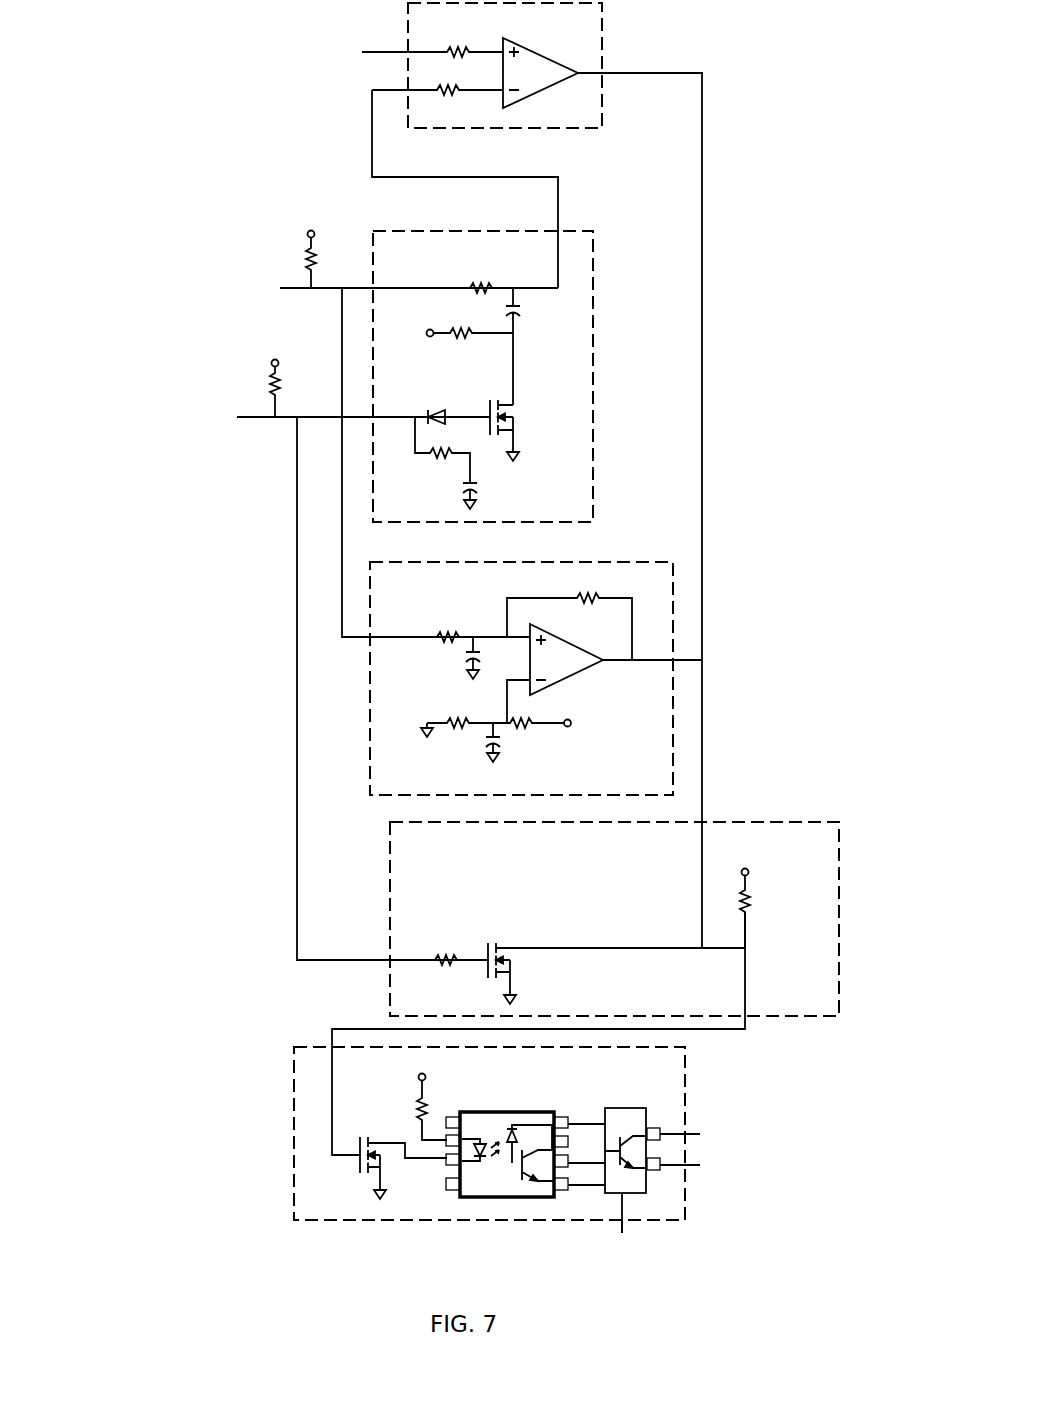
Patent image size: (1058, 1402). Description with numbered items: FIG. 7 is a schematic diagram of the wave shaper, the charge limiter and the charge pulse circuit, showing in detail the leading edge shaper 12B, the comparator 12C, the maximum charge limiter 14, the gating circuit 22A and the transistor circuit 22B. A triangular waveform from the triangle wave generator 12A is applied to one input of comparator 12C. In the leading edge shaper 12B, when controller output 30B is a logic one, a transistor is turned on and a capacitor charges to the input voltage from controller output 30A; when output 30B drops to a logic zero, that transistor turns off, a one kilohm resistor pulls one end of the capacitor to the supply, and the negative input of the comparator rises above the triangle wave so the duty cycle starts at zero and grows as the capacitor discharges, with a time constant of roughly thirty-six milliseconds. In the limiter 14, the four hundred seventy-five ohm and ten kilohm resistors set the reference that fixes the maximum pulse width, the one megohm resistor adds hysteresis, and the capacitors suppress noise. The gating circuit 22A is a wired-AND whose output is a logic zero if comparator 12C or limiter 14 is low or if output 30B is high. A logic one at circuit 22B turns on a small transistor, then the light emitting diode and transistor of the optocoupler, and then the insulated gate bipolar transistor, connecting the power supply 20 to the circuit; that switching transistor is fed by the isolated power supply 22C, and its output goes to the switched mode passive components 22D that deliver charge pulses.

The triangle wave generator 12A is at (262, 35).
The leading edge shaper 12B is at (487, 225).
The comparator 12C is at (508, 132).
The maximum charge limiter 14 is at (472, 558).
The power supply 20 is at (771, 1130).
The gating circuit 22A is at (388, 850).
The IGBT transistor circuit 22B is at (470, 1225).
The isolated power supply 22C is at (677, 1258).
The switched mode passive components 22D is at (729, 1167).
The controller output 30A is at (231, 251).
The controller output 30B is at (206, 395).